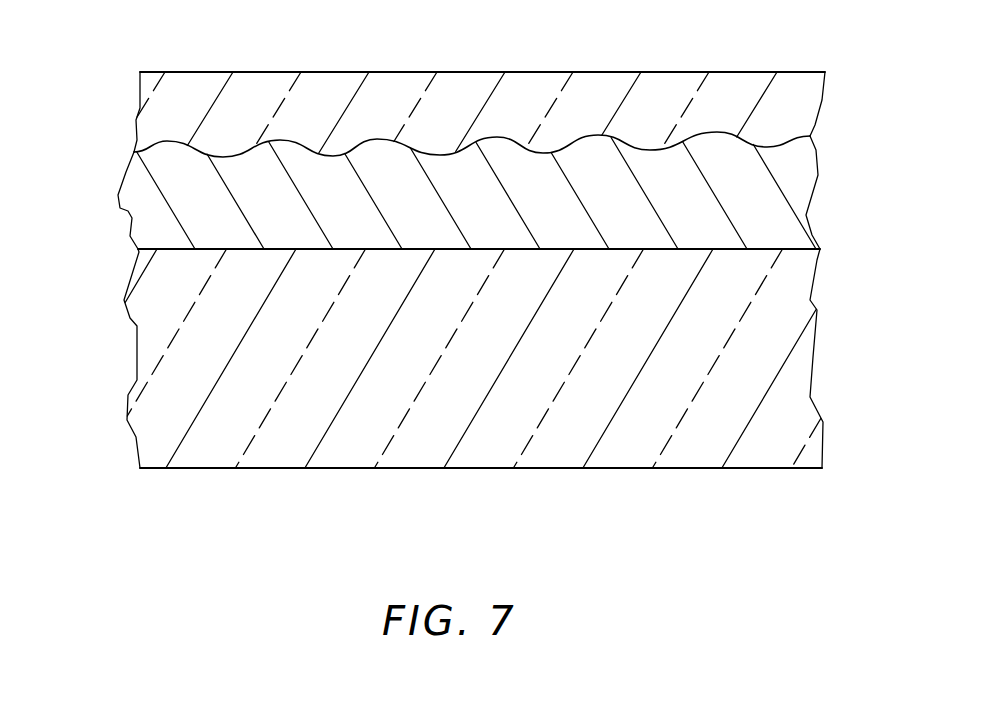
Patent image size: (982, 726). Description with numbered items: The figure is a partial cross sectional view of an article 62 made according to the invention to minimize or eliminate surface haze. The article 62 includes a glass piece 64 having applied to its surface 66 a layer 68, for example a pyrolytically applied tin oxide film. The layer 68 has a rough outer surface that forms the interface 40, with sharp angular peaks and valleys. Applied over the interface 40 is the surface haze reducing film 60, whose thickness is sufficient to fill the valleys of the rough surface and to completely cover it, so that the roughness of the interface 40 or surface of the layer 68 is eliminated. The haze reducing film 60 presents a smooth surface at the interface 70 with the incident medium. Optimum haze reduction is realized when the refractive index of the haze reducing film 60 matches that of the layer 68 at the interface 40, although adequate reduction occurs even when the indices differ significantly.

The interface 40 is at (774, 147).
The surface haze reducing film 60 is at (138, 97).
The article 62 is at (682, 470).
The glass piece 64 is at (813, 360).
The surface 66 is at (792, 248).
The layer 68 is at (800, 178).
The interface 70 is at (788, 71).